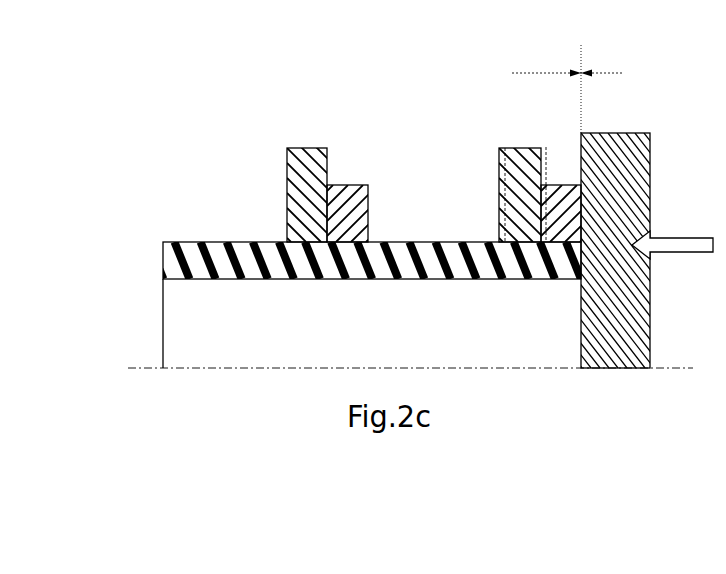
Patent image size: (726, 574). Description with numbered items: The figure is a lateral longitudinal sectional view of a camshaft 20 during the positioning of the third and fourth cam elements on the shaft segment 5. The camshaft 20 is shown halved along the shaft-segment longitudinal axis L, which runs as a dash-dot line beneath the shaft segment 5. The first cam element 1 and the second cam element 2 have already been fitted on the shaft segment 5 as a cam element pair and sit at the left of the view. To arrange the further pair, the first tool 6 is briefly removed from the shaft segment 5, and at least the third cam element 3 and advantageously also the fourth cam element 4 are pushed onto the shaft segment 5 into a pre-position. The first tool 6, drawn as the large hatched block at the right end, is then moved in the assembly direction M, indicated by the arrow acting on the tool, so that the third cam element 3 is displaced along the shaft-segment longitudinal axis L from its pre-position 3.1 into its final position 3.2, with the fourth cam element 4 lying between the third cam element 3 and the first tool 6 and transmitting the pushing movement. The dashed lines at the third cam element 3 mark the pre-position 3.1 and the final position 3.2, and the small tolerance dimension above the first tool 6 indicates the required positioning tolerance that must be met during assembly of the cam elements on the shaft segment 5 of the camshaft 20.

The first cam element 1 is at (305, 147).
The second cam element 2 is at (350, 185).
The third cam element 3 is at (499, 225).
The pre-position 3.1 is at (546, 147).
The final position 3.2 is at (499, 165).
The fourth cam element 4 is at (561, 185).
The shaft segment 5 is at (180, 242).
The first tool 6 is at (632, 133).
The camshaft 20 is at (422, 90).
The shaft-segment longitudinal axis L is at (132, 366).
The assembly direction M is at (683, 238).